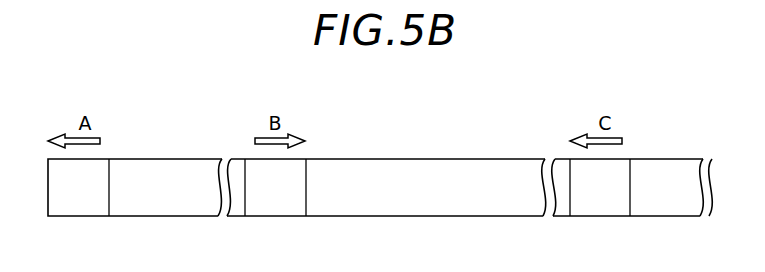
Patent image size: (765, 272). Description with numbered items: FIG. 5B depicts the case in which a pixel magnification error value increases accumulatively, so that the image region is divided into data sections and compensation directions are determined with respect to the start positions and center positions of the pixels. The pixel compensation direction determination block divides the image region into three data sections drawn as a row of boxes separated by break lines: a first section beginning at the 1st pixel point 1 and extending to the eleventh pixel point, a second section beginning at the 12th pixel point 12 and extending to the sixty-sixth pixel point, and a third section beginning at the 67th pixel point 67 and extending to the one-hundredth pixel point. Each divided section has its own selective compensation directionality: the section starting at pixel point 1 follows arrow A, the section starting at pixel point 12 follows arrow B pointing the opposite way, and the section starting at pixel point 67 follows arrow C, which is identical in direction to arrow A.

The 1st pixel point 1 is at (135, 204).
The 12th pixel point 12 is at (386, 204).
The 67th pixel point 67 is at (632, 204).